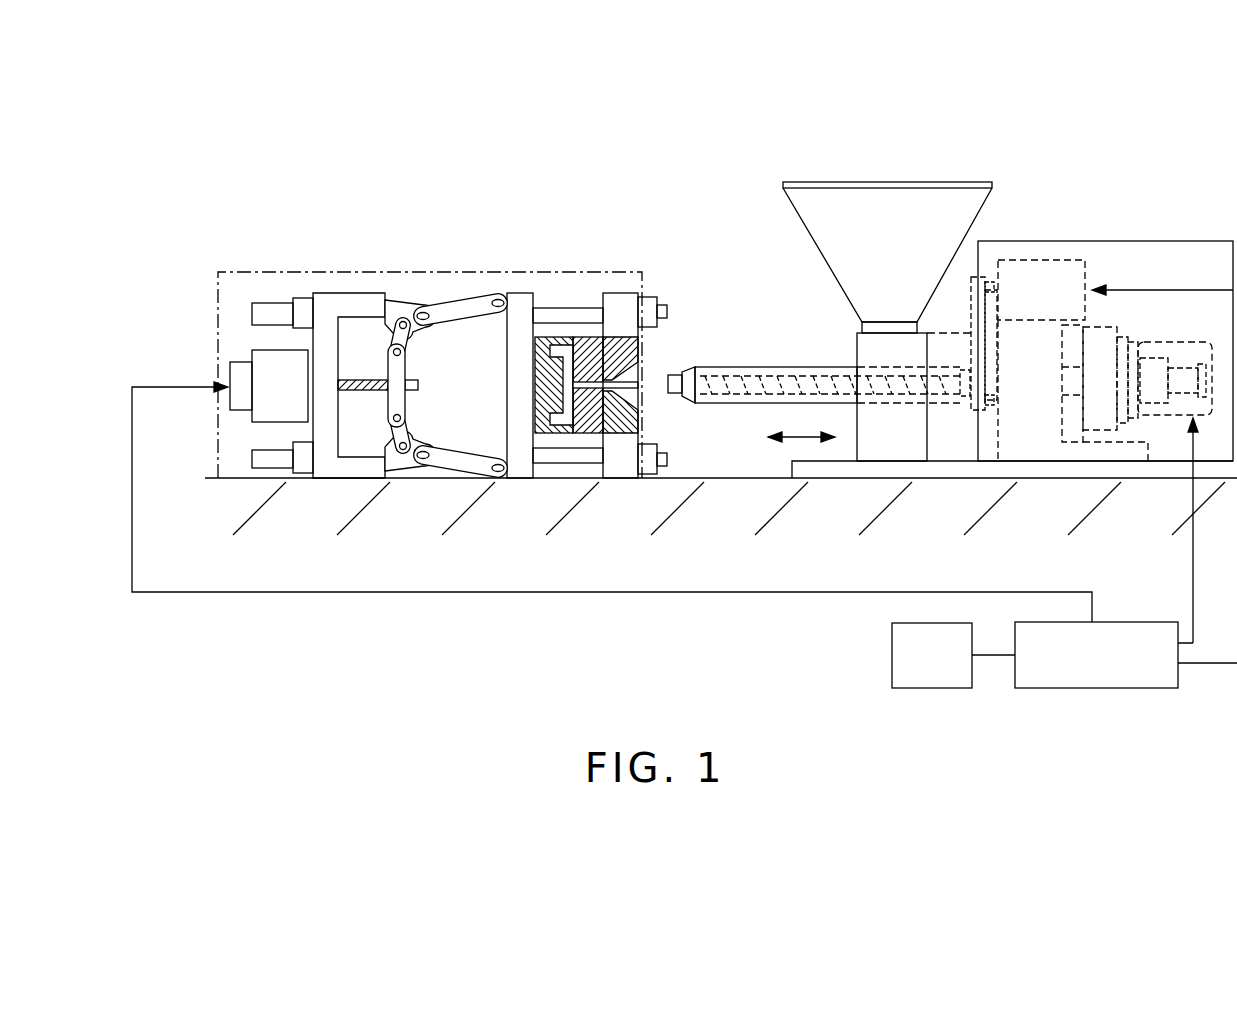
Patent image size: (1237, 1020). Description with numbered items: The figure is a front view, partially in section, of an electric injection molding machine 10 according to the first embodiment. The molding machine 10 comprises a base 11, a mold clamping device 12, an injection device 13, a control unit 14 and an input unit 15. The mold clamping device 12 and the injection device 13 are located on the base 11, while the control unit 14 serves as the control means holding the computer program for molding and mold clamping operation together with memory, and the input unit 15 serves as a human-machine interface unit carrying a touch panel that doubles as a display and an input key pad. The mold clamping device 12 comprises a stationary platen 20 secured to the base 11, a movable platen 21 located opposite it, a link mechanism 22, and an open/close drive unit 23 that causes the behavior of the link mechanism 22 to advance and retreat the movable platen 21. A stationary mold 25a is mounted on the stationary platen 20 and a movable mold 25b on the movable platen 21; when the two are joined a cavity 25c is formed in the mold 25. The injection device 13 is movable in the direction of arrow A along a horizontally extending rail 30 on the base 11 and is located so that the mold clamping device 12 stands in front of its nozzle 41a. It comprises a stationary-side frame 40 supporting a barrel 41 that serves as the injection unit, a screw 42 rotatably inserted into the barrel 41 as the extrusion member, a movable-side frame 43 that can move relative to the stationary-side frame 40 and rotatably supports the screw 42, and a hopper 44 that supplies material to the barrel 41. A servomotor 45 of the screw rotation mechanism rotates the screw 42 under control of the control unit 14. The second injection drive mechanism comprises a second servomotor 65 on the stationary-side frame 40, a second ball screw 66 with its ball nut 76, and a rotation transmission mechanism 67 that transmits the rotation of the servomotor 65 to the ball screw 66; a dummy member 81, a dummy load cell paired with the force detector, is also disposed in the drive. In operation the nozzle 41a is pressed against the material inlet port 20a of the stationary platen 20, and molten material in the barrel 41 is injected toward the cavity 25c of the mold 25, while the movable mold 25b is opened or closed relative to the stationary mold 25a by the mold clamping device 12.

The molding machine 10 is at (1025, 97).
The base 11 is at (672, 478).
The mold clamping device 12 is at (435, 270).
The injection device 13 is at (1140, 240).
The control unit 14 is at (1096, 690).
The input unit 15 is at (935, 690).
The stationary platen 20 is at (626, 296).
The material inlet port 20a is at (612, 378).
The movable platen 21 is at (516, 293).
The link mechanism 22 is at (400, 295).
The open/close drive unit 23 is at (258, 352).
The mold 25 is at (522, 200).
The stationary mold 25a is at (590, 337).
The movable mold 25b is at (556, 337).
The cavity 25c is at (583, 408).
The rail 30 is at (818, 461).
The stationary-side frame 40 is at (1030, 452).
The barrel 41 is at (780, 366).
The nozzle 41a is at (683, 385).
The screw 42 is at (822, 378).
The movable-side frame 43 is at (1088, 445).
The hopper 44 is at (905, 181).
The servomotor 45 is at (1162, 440).
The second servomotor 65 is at (1058, 260).
The second ball screw 66 is at (1190, 362).
The rotation transmission mechanism 67 is at (985, 262).
The ball nut 76 is at (1136, 445).
The dummy member 81 is at (1132, 372).